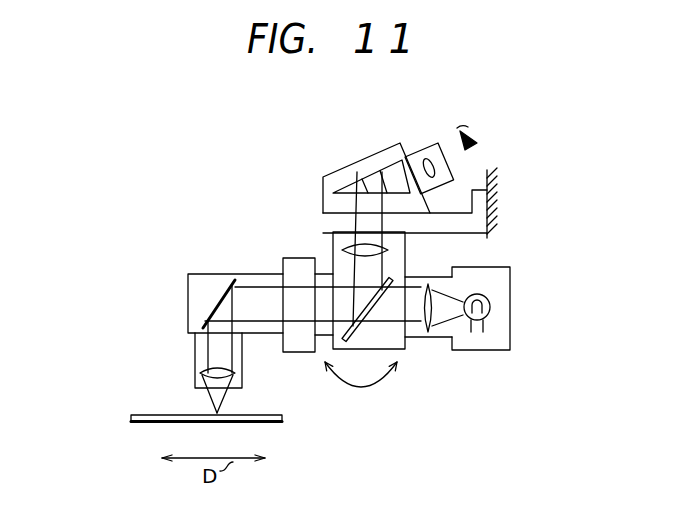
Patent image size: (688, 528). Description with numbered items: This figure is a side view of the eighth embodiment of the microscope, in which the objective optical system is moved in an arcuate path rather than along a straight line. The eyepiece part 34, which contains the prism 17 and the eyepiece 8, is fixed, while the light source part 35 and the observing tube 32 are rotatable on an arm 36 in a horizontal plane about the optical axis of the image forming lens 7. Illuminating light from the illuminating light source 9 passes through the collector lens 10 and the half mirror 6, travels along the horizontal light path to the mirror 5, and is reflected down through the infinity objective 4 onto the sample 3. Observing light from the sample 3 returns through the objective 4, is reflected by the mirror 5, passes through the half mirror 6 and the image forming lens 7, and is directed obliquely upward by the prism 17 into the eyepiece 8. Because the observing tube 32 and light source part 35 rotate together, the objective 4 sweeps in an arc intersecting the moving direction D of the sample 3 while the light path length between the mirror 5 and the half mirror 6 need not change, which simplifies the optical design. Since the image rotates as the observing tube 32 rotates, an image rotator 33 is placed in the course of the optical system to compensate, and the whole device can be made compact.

The sample 3 is at (142, 422).
The infinity objective 4 is at (235, 373).
The mirror 5 is at (217, 306).
The half mirror 6 is at (380, 305).
The image forming lens 7 is at (388, 250).
The eyepiece 8 is at (423, 152).
The illuminating light source 9 is at (490, 308).
The collector lens 10 is at (432, 330).
The prism 17 is at (370, 172).
The observing tube 32 is at (247, 274).
The image rotator 33 is at (292, 258).
The eyepiece part 34 is at (377, 153).
The light source part 35 is at (497, 267).
The arm 36 is at (453, 212).